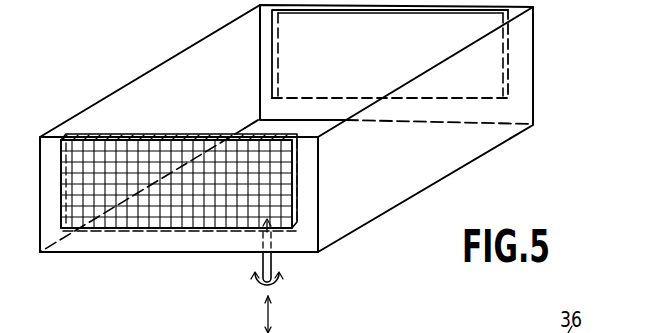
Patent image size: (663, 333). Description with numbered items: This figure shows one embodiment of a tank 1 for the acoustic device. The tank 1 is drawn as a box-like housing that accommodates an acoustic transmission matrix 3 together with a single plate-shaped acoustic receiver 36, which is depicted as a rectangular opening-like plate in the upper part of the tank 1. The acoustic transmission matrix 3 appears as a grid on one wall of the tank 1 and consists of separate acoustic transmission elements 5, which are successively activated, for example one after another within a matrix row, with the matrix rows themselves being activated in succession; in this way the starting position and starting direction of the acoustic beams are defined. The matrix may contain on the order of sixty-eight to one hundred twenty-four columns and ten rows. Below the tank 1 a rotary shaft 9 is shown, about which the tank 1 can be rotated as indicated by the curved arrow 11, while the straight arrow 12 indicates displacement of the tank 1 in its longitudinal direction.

The tank 1 is at (360, 229).
The acoustic transmission matrix 3 is at (103, 236).
The acoustic transmission elements 5 is at (123, 152).
The rotary shaft 9 is at (260, 257).
The arrow 11 is at (296, 275).
The arrow 12 is at (271, 315).
The plate-shaped acoustic receiver 36 is at (365, 13).